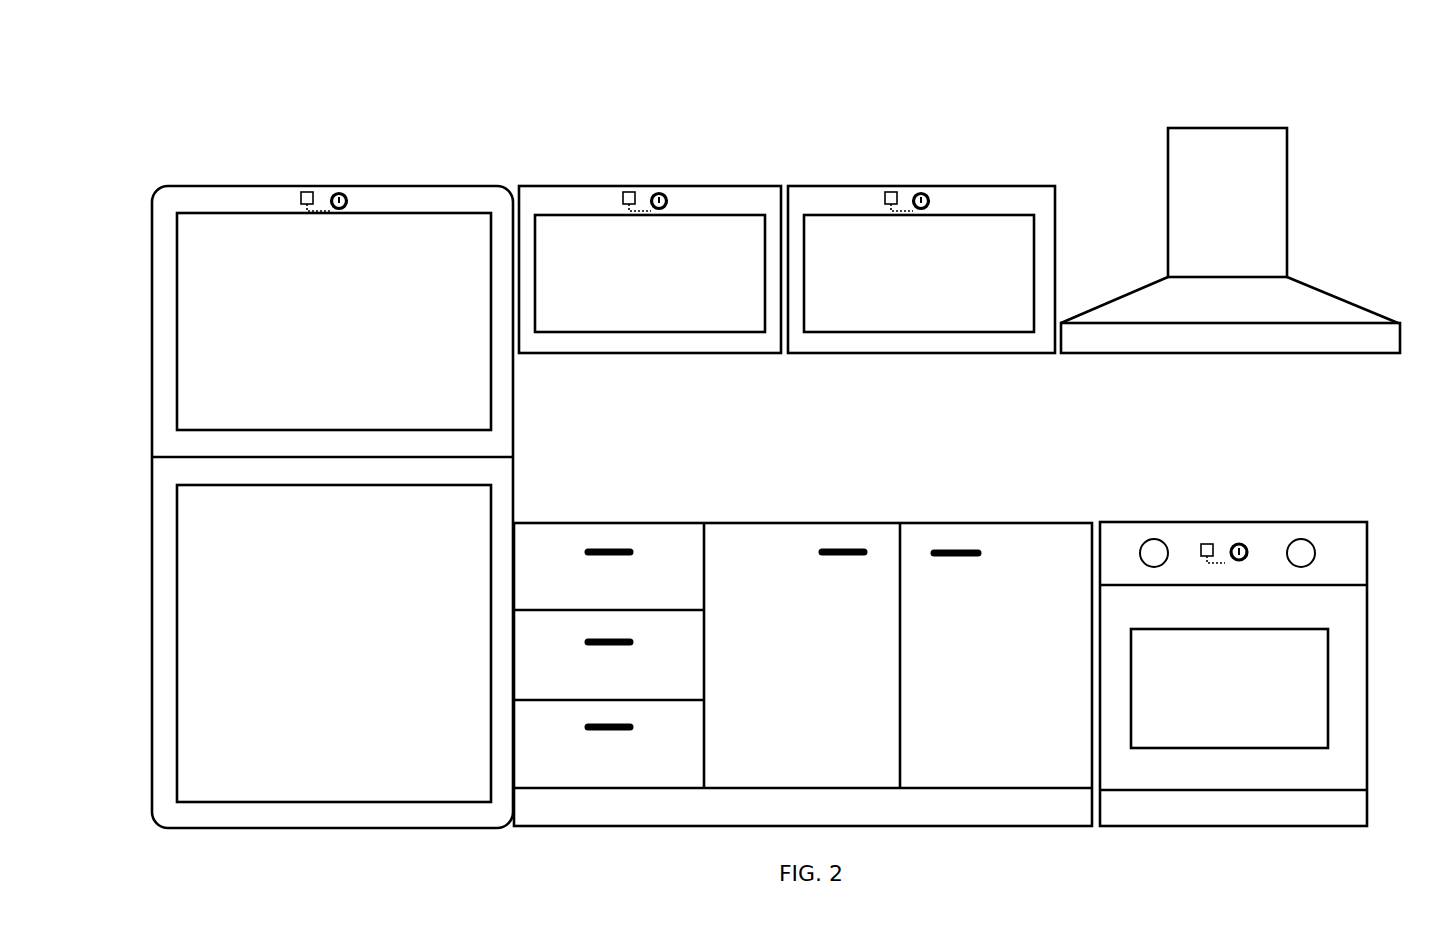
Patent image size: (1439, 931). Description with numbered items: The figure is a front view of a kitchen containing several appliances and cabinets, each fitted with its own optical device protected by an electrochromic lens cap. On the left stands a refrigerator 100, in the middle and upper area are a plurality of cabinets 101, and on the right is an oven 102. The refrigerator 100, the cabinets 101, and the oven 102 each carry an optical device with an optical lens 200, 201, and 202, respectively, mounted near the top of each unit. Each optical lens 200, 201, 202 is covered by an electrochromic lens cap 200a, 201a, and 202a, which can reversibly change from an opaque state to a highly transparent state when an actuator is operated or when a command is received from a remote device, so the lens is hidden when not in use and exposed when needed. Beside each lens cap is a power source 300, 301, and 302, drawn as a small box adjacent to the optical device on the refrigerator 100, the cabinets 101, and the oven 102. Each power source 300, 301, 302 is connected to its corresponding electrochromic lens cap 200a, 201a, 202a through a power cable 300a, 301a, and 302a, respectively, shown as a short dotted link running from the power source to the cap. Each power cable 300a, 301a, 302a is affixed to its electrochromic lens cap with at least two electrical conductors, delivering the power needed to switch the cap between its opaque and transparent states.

The refrigerator 100 is at (212, 182).
The cabinets 101 is at (787, 200).
The oven 102 is at (1285, 520).
The optical lens 200 is at (344, 197).
The electrochromic lens cap 200a is at (339, 193).
The optical lens 201 is at (664, 195).
The electrochromic lens cap 201a is at (657, 195).
The optical lens 202 is at (1242, 546).
The electrochromic lens cap 202a is at (1237, 546).
The power source 300 is at (303, 192).
The power cable 300a is at (307, 213).
The power source 301 is at (624, 195).
The power cable 301a is at (771, 333).
The power source 302 is at (1203, 545).
The power cable 302a is at (1223, 563).